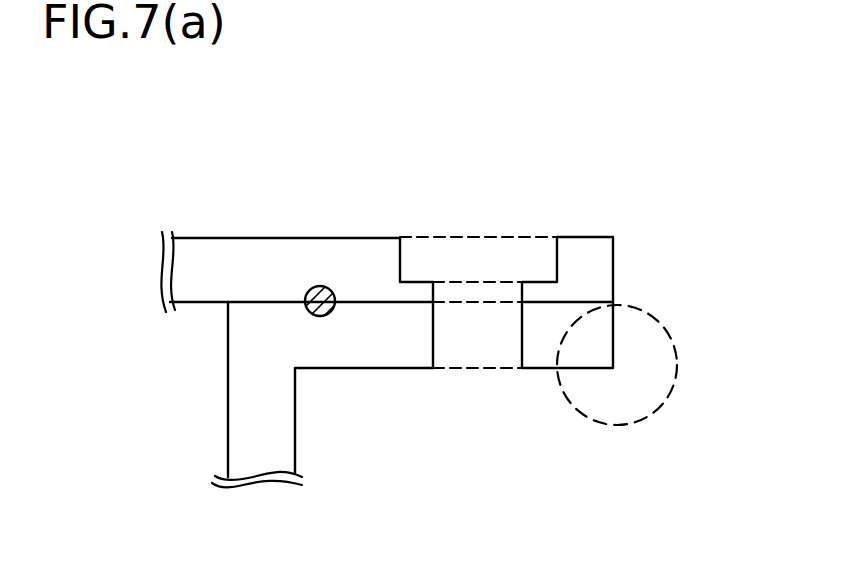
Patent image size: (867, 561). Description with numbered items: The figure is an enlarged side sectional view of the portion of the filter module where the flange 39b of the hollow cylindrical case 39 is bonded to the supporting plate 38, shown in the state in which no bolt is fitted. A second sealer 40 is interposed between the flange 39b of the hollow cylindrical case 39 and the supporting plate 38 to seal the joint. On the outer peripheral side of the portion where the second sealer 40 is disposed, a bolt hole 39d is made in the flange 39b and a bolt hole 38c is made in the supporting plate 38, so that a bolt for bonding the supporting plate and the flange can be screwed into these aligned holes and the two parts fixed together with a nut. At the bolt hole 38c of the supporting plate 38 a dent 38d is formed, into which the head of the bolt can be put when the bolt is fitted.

The supporting plate 38 is at (222, 252).
The hollow cylindrical case 39 is at (240, 412).
The second sealer 40 is at (320, 285).
The dent 38d is at (428, 258).
The bolt hole 38c is at (483, 296).
The bolt hole 39d is at (478, 359).
The flange 39b is at (658, 373).